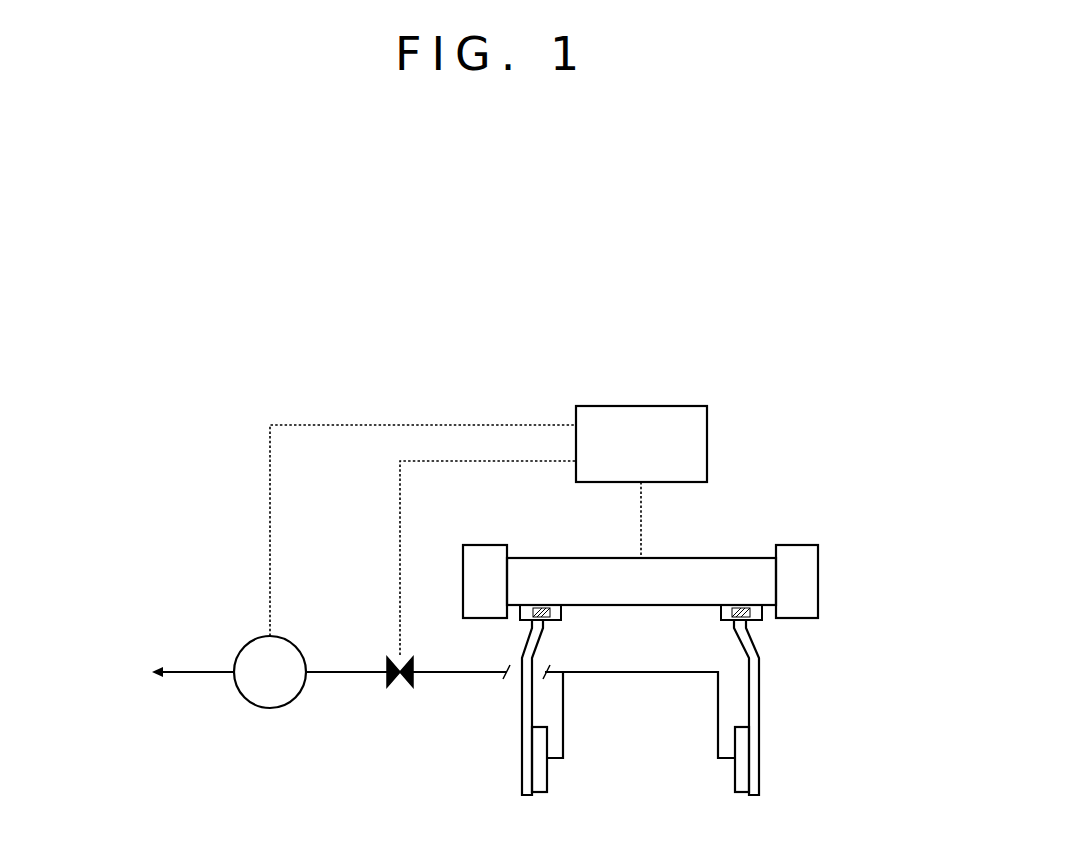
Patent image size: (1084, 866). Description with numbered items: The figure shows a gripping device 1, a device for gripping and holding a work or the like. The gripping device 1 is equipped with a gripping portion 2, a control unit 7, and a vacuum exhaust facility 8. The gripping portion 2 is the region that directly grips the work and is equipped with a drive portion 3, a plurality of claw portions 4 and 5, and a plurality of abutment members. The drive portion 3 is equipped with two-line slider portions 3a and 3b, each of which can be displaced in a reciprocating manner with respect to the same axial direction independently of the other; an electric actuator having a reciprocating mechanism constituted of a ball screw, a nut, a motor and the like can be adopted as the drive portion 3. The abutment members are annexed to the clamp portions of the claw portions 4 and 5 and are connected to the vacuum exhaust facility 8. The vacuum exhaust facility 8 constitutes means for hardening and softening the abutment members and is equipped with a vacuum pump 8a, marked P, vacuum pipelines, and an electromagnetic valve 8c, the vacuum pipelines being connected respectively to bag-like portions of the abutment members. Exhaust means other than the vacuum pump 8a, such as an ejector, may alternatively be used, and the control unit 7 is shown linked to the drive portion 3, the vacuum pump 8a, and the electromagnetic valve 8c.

The gripping device 1 is at (203, 362).
The gripping portion 2 is at (639, 666).
The drive portion 3 is at (548, 548).
The slider portion 3a is at (565, 614).
The slider portion 3b is at (715, 613).
The claw portion 4 is at (528, 713).
The claw portion 5 is at (749, 713).
The control unit 7 is at (708, 440).
The vacuum exhaust facility 8 is at (443, 704).
The vacuum pump 8a is at (270, 708).
The electromagnetic valve 8c is at (417, 667).